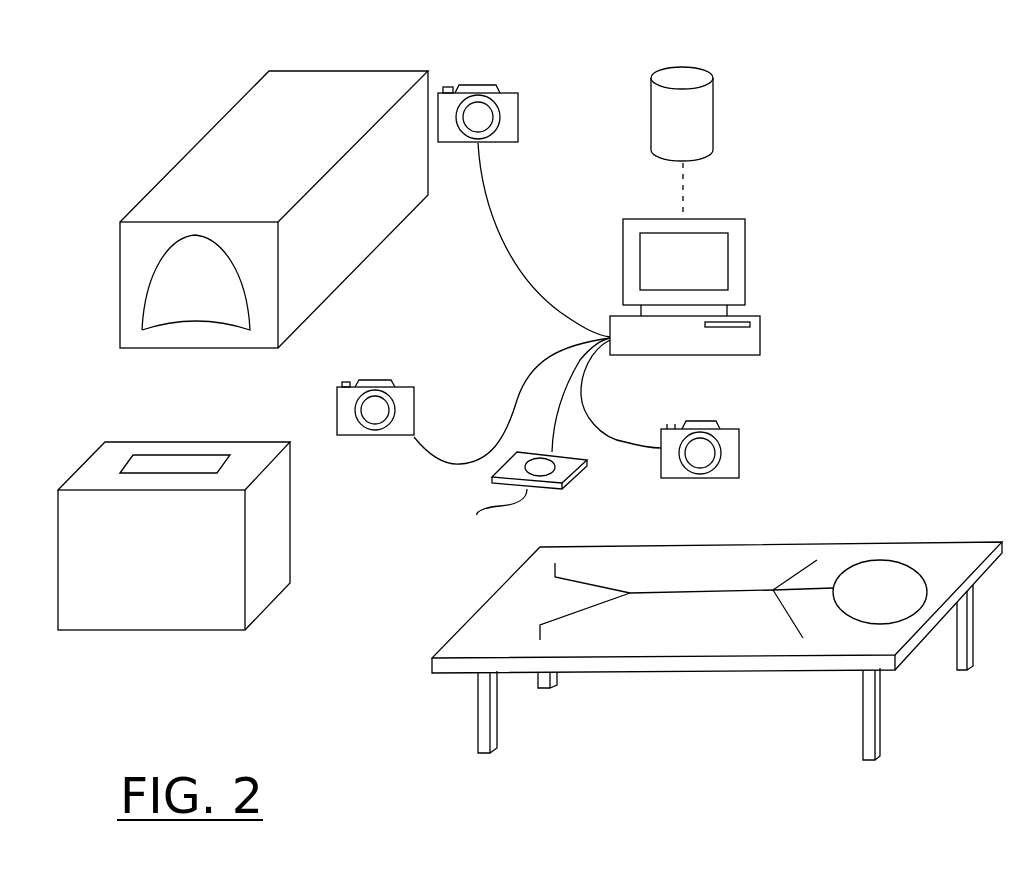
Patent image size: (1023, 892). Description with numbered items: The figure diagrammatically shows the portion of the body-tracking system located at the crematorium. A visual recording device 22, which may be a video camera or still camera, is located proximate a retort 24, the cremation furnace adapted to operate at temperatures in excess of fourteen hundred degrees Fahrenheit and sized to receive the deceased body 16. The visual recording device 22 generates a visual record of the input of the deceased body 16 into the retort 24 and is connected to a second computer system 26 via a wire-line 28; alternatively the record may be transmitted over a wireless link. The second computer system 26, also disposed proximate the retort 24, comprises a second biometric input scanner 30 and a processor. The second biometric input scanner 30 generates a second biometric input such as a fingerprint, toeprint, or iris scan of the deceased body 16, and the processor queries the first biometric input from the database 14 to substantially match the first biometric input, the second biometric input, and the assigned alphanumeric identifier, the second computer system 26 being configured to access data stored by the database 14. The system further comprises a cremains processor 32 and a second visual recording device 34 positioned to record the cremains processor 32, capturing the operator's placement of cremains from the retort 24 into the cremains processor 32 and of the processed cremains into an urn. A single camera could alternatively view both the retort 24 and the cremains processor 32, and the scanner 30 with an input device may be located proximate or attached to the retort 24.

The database 14 is at (718, 108).
The deceased body 16 is at (906, 563).
The visual recording device 22 is at (507, 88).
The retort 24 is at (172, 162).
The second computer system 26 is at (748, 260).
The wire-line 28 is at (506, 262).
The second biometric input scanner 30 is at (537, 443).
The cremains processor 32 is at (258, 616).
The visual recording device 34 is at (363, 440).